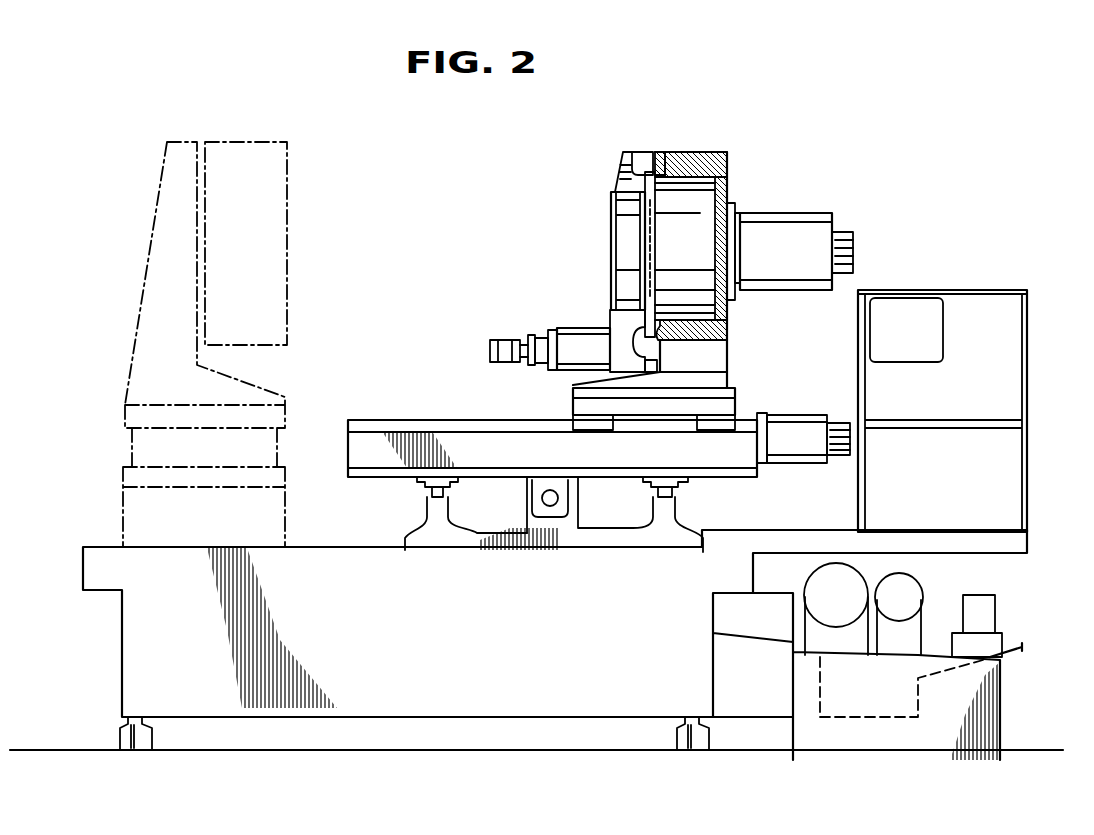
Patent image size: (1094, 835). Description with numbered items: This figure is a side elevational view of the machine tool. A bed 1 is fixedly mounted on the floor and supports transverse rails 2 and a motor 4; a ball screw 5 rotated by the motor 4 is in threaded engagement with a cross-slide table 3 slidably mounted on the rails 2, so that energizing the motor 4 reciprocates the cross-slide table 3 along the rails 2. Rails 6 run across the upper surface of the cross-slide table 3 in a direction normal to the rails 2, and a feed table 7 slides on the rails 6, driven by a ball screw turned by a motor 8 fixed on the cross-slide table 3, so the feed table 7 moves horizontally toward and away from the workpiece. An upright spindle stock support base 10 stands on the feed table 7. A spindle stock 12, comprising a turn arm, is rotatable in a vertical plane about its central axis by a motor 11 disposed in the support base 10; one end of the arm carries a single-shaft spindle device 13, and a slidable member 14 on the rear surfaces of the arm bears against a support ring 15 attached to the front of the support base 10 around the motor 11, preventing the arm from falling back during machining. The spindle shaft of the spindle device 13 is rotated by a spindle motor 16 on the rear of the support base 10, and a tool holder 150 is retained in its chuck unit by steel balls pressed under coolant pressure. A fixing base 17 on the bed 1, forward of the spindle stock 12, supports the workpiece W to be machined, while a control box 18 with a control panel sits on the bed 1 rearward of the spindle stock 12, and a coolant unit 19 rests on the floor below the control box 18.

The workpiece W is at (243, 142).
The bed 1 is at (418, 690).
The transverse rails 2 is at (447, 493).
The cross-slide table 3 is at (373, 453).
The motor 4 is at (532, 520).
The ball screw 5 is at (550, 507).
The rails 6 is at (382, 426).
The feed table 7 is at (723, 407).
The motor 8 is at (802, 443).
The spindle stock support base 10 is at (722, 342).
The motor 11 is at (693, 190).
The spindle stock 12 is at (627, 220).
The single-shaft spindle device 13 is at (578, 328).
The slidable member 14 is at (645, 152).
The support ring 15 is at (660, 152).
The spindle motor 16 is at (807, 225).
The fixing base 17 is at (142, 387).
The control box 18 is at (1012, 322).
The coolant unit 19 is at (982, 689).
The tool holder 150 is at (500, 340).